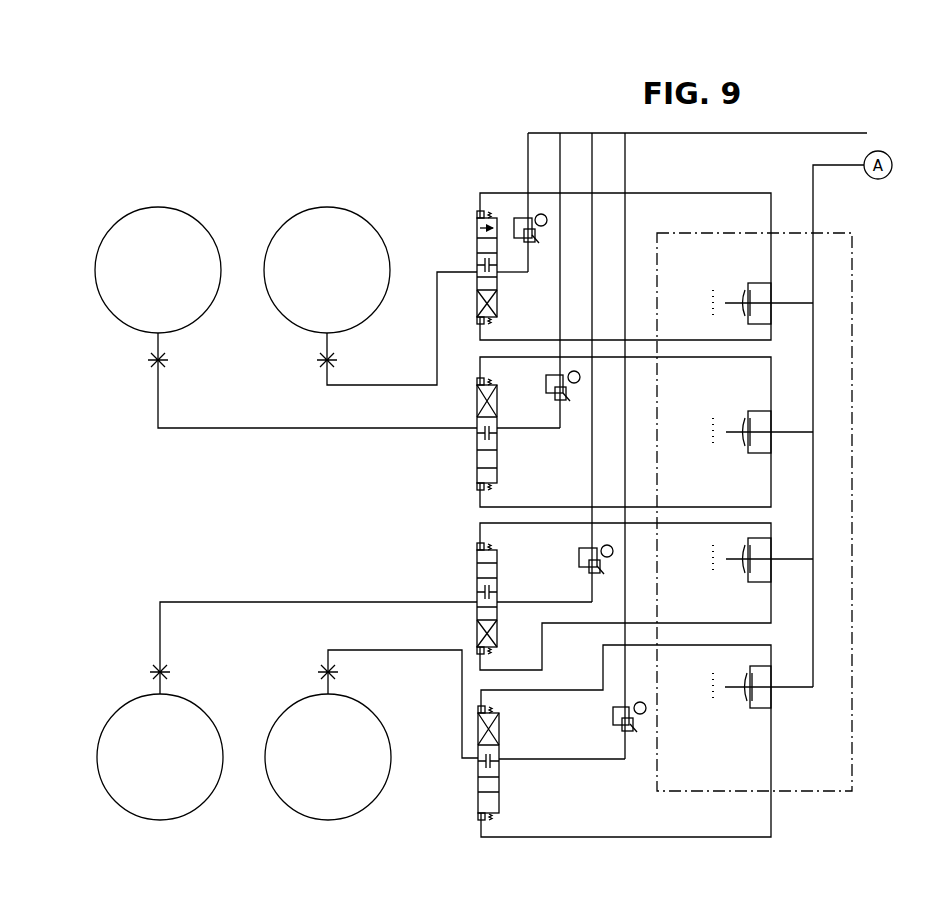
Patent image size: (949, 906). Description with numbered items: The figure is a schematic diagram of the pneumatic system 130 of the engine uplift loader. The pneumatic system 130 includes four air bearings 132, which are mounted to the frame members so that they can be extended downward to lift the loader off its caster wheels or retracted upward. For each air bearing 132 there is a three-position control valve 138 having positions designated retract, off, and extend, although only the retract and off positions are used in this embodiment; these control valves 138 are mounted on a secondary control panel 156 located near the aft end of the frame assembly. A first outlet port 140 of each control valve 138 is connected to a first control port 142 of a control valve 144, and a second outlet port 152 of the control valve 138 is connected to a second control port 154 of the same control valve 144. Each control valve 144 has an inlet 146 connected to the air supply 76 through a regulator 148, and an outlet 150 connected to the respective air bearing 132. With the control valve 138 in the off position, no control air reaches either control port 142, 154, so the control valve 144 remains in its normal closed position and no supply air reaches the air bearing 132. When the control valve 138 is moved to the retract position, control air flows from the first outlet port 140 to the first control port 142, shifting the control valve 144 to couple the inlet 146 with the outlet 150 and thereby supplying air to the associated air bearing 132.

The pneumatic system 130 is at (524, 60).
The air supply 76 is at (800, 133).
The air bearing 132 is at (297, 215).
The three-position control valve 138 is at (771, 300).
The first outlet port 140 is at (770, 286).
The first control port 142 is at (477, 214).
The control valve 144 is at (500, 306).
The inlet 146 is at (497, 272).
The regulator 148 is at (519, 214).
The outlet 150 is at (477, 272).
The second outlet port 152 is at (768, 325).
The second control port 154 is at (481, 323).
The secondary control panel 156 is at (853, 390).